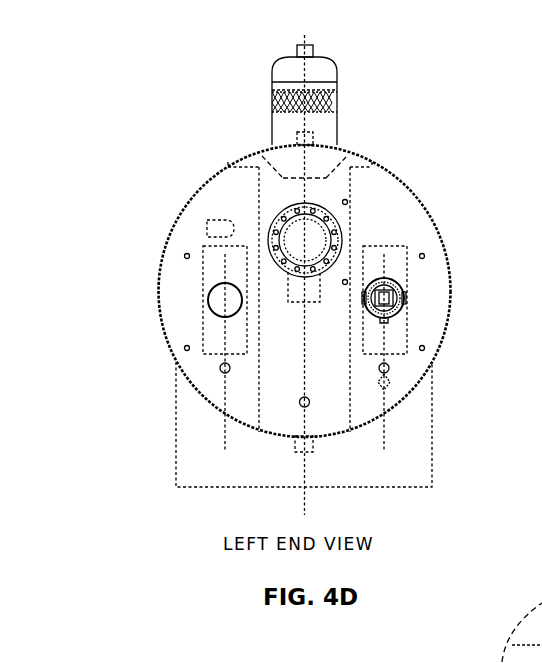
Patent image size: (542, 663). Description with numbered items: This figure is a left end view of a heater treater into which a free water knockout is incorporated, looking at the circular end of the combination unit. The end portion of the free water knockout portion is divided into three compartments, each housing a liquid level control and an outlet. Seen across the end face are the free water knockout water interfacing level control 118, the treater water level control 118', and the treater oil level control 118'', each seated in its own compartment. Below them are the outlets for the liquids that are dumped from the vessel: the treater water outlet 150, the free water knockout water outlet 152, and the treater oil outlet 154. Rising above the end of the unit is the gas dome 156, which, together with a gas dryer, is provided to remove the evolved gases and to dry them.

The gas dome 156 is at (324, 70).
The free water knockout water interfacing level control 118 is at (374, 211).
The treater water level control 118' is at (135, 274).
The treater oil level control 118'' is at (445, 300).
The treater water outlet 150 is at (219, 369).
The free water knockout water outlet 152 is at (299, 405).
The treater oil outlet 154 is at (389, 371).